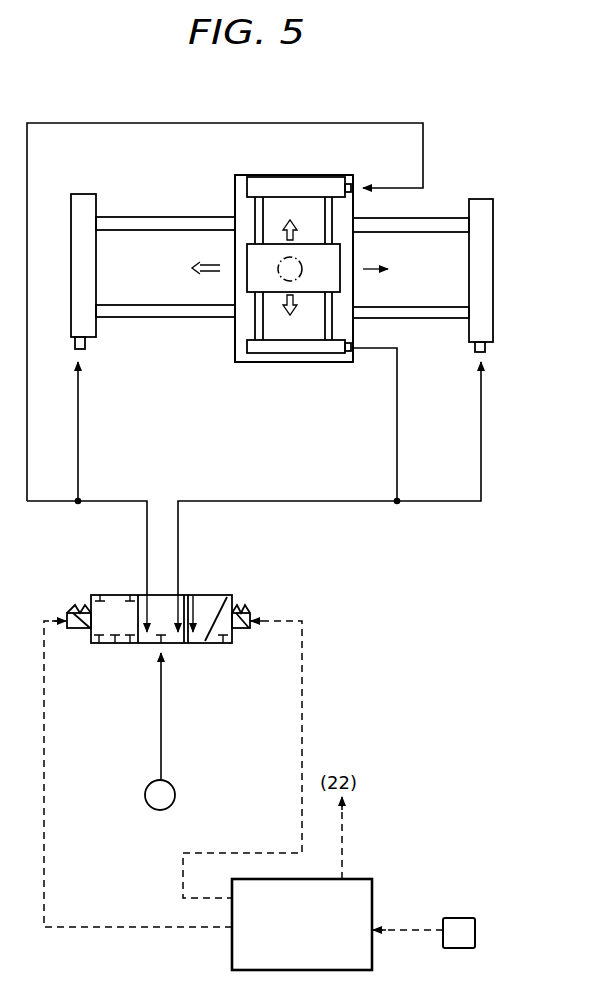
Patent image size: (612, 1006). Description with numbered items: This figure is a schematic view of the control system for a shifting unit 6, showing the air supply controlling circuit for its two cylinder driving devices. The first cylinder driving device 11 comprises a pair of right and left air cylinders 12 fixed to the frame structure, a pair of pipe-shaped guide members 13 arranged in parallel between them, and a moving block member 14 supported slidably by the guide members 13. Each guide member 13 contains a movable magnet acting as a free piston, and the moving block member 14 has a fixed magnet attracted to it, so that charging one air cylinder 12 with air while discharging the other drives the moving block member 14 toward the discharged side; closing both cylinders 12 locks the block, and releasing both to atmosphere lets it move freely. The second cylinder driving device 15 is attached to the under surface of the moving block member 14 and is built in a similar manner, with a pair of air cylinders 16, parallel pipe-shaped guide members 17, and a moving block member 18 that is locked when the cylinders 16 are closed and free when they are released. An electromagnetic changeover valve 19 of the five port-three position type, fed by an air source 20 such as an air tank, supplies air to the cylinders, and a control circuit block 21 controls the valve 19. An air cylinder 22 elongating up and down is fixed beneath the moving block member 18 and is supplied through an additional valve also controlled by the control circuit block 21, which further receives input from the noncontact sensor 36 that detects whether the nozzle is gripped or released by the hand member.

The shifting unit 6 is at (458, 175).
The first cylinder driving device 11 is at (165, 322).
The air cylinders 12 is at (73, 300).
The pipe-shaped guide members 13 is at (152, 220).
The moving block member 14 is at (239, 195).
The second cylinder driving device 15 is at (293, 357).
The air cylinders 16 is at (290, 183).
The pipe-shaped guide members 17 is at (257, 320).
The moving block member 18 is at (333, 257).
The electromagnetic changeover valve 19 is at (207, 580).
The air source 20 is at (175, 788).
The control circuit block 21 is at (302, 924).
The air cylinder 22 is at (273, 267).
The noncontact sensor 36 is at (463, 948).